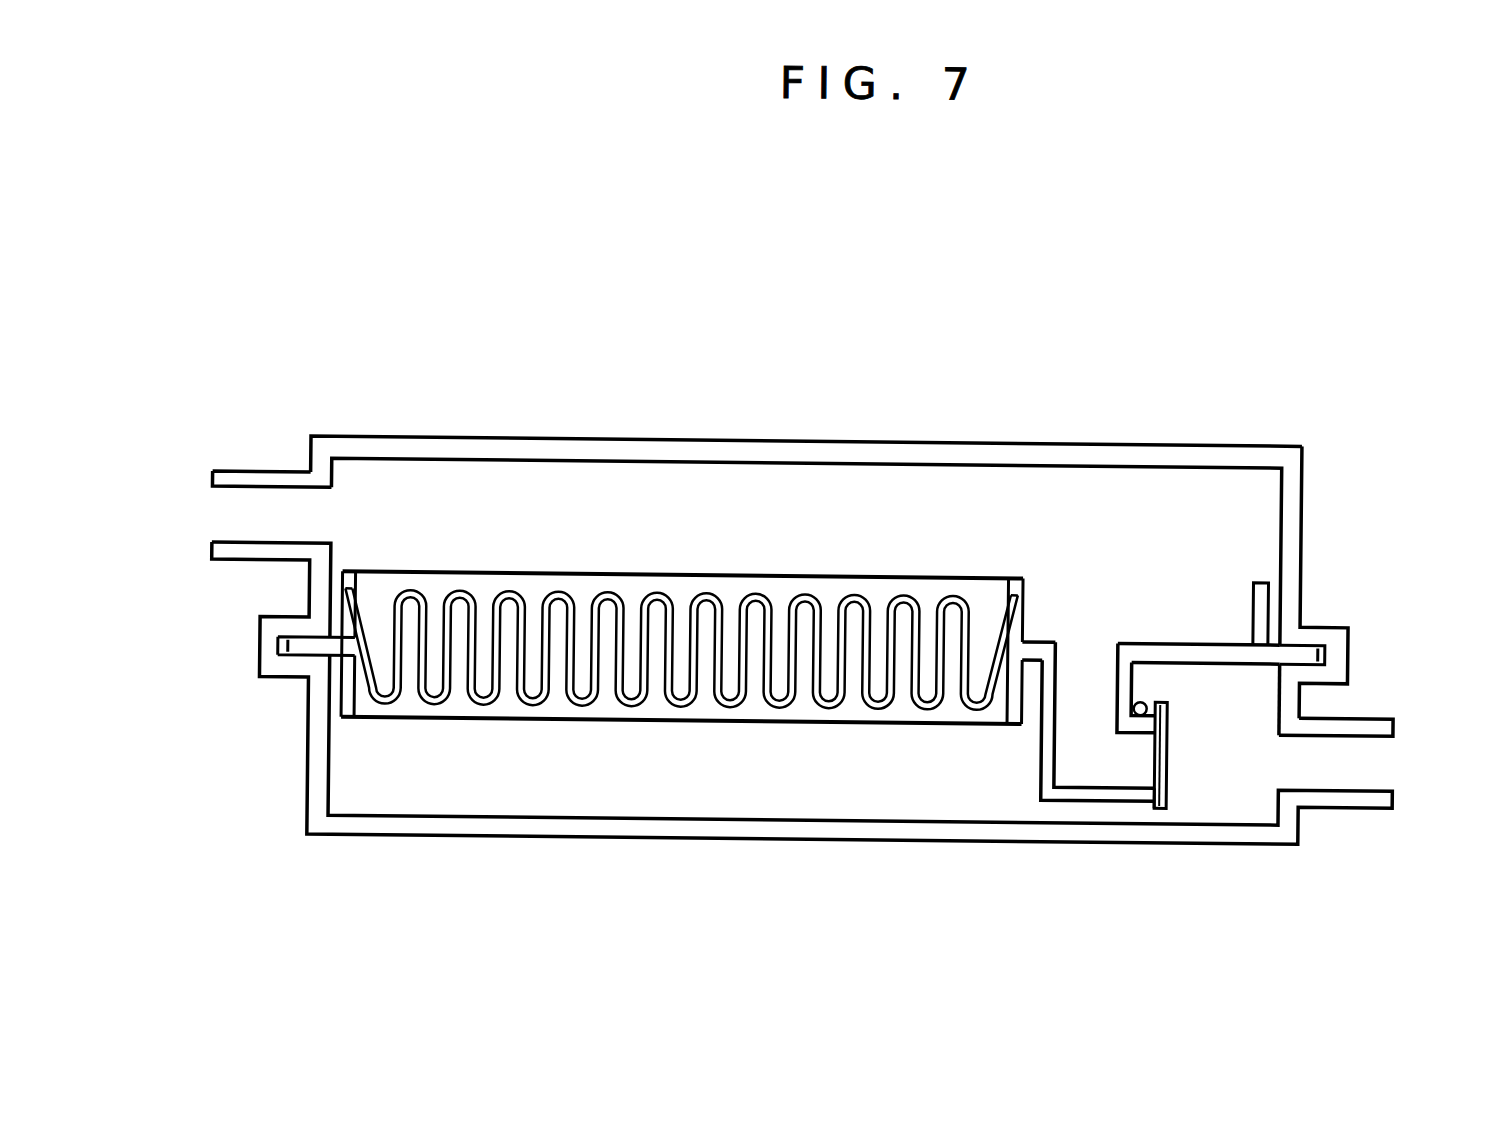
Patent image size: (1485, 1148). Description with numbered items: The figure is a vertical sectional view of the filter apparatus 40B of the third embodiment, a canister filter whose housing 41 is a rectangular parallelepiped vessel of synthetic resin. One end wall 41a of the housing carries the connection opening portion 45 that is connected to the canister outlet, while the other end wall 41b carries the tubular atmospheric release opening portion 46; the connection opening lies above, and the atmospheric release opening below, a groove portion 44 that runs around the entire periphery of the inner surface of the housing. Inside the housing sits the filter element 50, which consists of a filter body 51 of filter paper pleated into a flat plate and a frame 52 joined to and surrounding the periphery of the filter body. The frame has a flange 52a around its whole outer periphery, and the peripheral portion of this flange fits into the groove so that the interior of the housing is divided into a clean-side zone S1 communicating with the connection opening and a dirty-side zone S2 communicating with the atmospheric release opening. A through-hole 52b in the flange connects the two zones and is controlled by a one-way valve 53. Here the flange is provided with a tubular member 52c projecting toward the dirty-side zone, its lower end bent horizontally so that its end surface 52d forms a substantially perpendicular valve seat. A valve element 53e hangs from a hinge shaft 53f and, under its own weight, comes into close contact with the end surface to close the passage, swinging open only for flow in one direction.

The filter apparatus 40B is at (1062, 325).
The housing 41 is at (1168, 437).
The end wall 41a is at (321, 734).
The other end wall 41b is at (1301, 538).
The groove portion 44 is at (1305, 652).
The connection opening portion 45 is at (258, 473).
The atmospheric release opening portion 46 is at (1373, 714).
The filter element 50 is at (981, 372).
The filter body 51 is at (764, 593).
The frame 52 is at (1025, 596).
The flange 52a is at (1182, 639).
The through-hole 52b is at (1114, 659).
The tubular member 52c is at (1045, 750).
The end surface 52d is at (1166, 796).
The one-way valve 53 is at (1173, 819).
The valve element 53e is at (1168, 748).
The hinge shaft 53f is at (1150, 683).
The clean-side zone S1 is at (1087, 517).
The dirty-side zone S2 is at (775, 773).